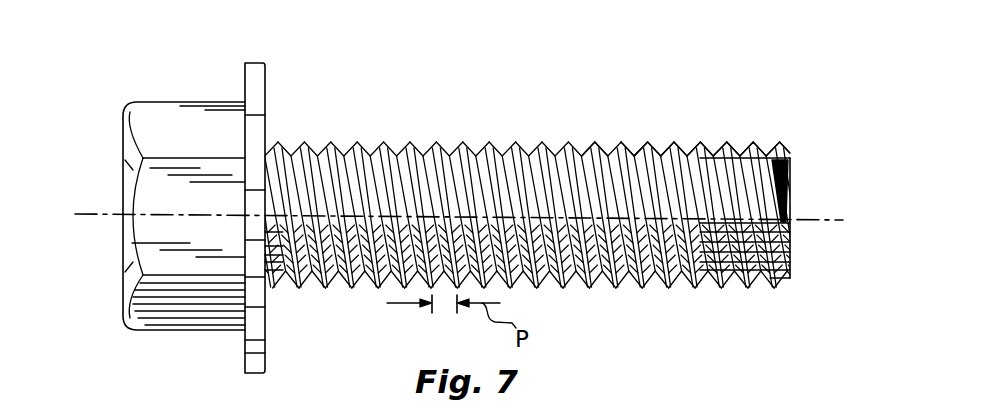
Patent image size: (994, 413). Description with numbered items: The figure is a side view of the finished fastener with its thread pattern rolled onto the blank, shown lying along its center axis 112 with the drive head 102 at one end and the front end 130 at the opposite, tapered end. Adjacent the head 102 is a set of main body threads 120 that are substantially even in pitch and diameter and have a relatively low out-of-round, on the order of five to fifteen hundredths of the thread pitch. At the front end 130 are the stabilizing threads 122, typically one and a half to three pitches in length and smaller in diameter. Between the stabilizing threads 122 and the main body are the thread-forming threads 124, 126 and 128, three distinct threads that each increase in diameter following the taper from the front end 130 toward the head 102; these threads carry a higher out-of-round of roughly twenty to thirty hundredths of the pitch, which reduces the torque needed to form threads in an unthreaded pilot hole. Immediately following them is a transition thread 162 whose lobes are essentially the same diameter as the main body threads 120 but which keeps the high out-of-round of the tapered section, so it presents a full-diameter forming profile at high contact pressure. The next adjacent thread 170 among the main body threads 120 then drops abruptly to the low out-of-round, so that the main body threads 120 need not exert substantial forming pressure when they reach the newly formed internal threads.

The drive head 102 is at (185, 113).
The main body threads 120 is at (595, 143).
The next adjacent thread 170 is at (600, 132).
The thread 162 is at (635, 150).
The thread-forming thread 128 is at (648, 145).
The thread-forming thread 126 is at (671, 146).
The thread-forming thread 124 is at (700, 146).
The stabilizing threads 122 is at (777, 152).
The front end 130 is at (793, 175).
The center axis 112 is at (815, 218).